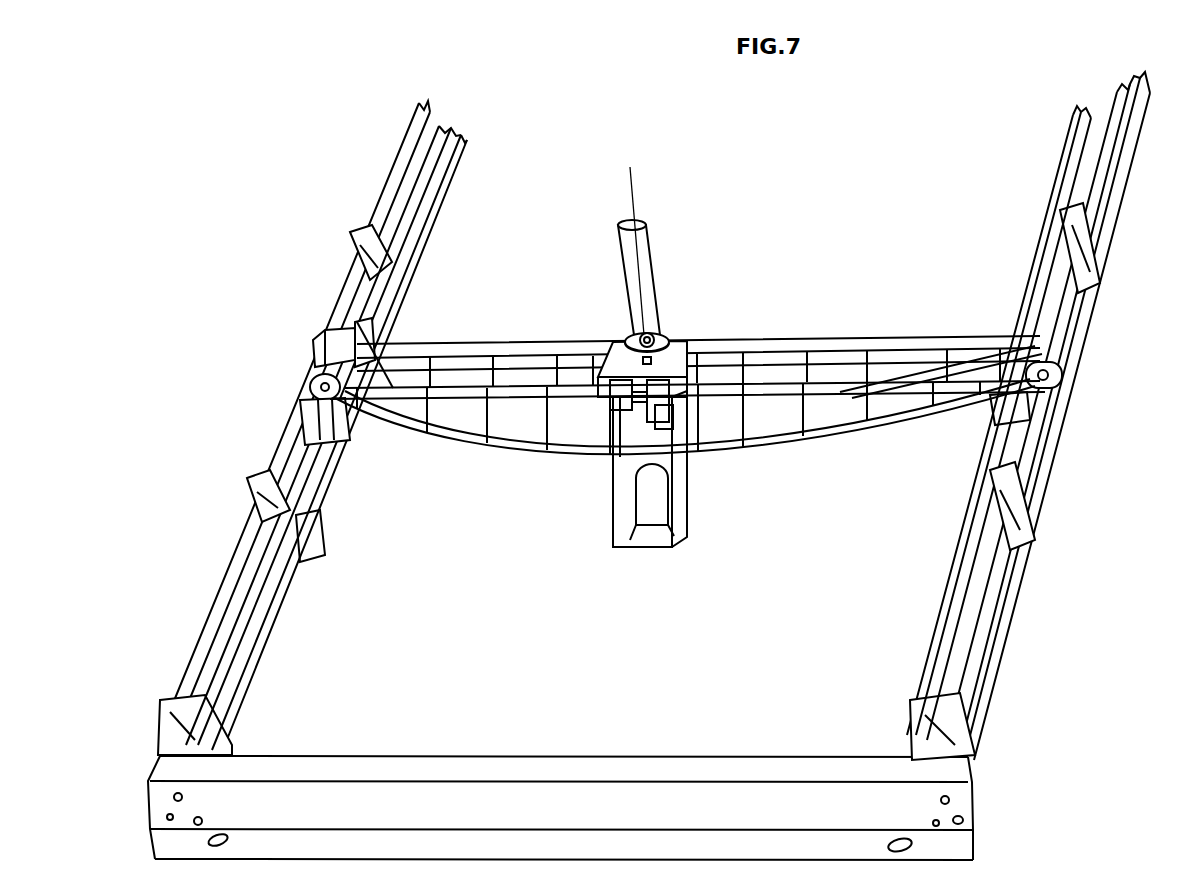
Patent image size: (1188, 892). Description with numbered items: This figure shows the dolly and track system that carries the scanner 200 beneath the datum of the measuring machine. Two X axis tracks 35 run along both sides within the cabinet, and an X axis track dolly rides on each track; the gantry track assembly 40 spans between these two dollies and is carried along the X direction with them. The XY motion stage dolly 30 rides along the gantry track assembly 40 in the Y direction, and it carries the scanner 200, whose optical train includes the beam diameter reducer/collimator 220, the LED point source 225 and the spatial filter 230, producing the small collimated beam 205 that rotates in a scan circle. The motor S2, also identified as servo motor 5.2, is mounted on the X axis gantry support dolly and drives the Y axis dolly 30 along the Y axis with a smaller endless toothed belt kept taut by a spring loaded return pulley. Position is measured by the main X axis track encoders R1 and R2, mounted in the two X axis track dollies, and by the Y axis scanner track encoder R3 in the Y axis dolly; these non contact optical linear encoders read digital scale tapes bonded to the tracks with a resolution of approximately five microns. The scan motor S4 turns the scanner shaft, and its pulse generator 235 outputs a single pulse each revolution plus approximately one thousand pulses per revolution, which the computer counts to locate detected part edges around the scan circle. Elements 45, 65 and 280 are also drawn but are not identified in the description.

The main X axis track encoder R1 is at (393, 230).
The main X axis track encoder R2 is at (955, 558).
The Y axis scanner track encoder R3 is at (353, 327).
The motor S2 is at (236, 337).
The servo motor 5.2 is at (333, 350).
The tracks 35 is at (273, 607).
The pivot 45 is at (312, 410).
The gantry track assembly 40 is at (773, 390).
The cross bar 65 is at (1015, 342).
The scanner 200 is at (618, 330).
The small beam 205 is at (624, 184).
The post 280 is at (604, 233).
The XY motion stage dolly 30 is at (617, 363).
The pulse generator 235 is at (633, 457).
The scan motor S4 is at (672, 428).
The beam diameter reducer/collimator 220 is at (537, 469).
The LED point source 225 is at (537, 469).
The spatial filter 230 is at (650, 502).